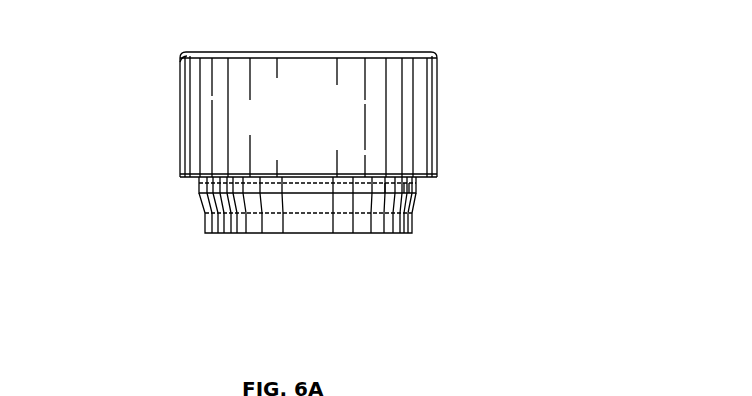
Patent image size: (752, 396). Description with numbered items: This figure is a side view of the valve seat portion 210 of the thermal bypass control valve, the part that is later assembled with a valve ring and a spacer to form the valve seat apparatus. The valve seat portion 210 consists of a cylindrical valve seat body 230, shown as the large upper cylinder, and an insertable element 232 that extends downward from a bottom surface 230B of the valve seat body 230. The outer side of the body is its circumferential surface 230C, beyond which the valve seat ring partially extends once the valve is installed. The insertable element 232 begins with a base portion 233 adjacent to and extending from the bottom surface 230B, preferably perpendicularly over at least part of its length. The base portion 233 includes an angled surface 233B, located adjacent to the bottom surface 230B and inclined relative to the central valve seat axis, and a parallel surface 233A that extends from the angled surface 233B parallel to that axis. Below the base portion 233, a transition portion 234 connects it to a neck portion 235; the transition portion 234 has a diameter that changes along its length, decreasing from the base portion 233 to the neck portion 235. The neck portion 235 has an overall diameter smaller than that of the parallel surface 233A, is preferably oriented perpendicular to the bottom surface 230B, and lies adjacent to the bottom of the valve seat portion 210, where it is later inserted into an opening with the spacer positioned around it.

The valve seat portion 210 is at (441, 98).
The cylindrical valve seat body 230 is at (179, 98).
The circumferential surface 230C is at (179, 140).
The bottom surface 230B is at (197, 181).
The insertable element 232 is at (443, 178).
The base portion 233 is at (199, 184).
The parallel surface 233A is at (405, 186).
The angled surface 233B is at (385, 178).
The transition portion 234 is at (203, 214).
The neck portion 235 is at (205, 231).